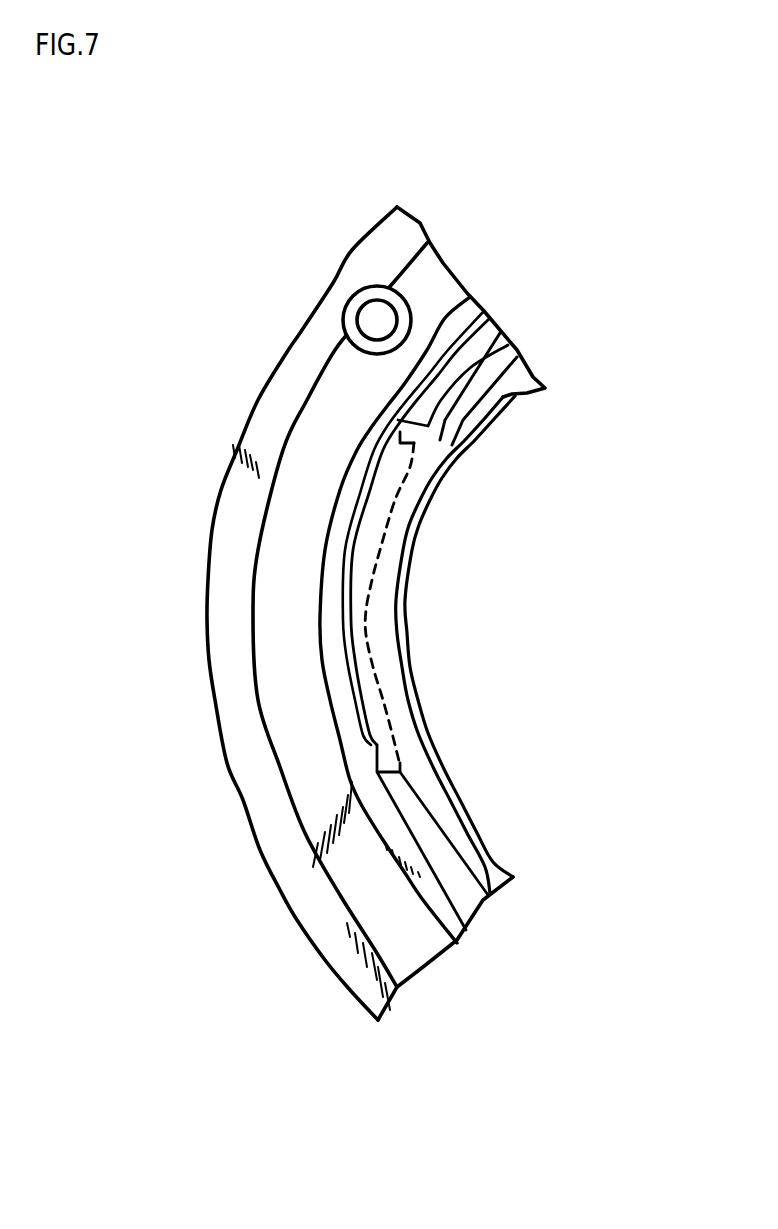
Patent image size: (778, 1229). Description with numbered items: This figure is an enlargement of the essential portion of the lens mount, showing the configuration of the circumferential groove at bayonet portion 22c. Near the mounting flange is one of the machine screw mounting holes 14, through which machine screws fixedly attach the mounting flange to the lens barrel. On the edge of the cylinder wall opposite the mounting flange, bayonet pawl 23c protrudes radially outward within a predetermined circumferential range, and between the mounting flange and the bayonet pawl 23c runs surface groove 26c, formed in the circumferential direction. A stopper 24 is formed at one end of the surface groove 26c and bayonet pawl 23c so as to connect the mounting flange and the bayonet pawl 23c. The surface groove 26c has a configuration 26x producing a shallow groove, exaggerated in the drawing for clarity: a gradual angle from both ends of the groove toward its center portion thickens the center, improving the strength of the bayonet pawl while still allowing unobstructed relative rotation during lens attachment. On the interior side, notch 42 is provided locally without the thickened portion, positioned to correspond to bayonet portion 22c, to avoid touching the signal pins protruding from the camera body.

The machine screw mounting hole 14 is at (373, 317).
The bayonet portion 22c is at (352, 590).
The stopper 24 is at (400, 421).
The bayonet pawl 23c is at (373, 748).
The surface groove 26c is at (367, 693).
The surface groove configuration 26x is at (366, 622).
The notch 42 is at (422, 663).